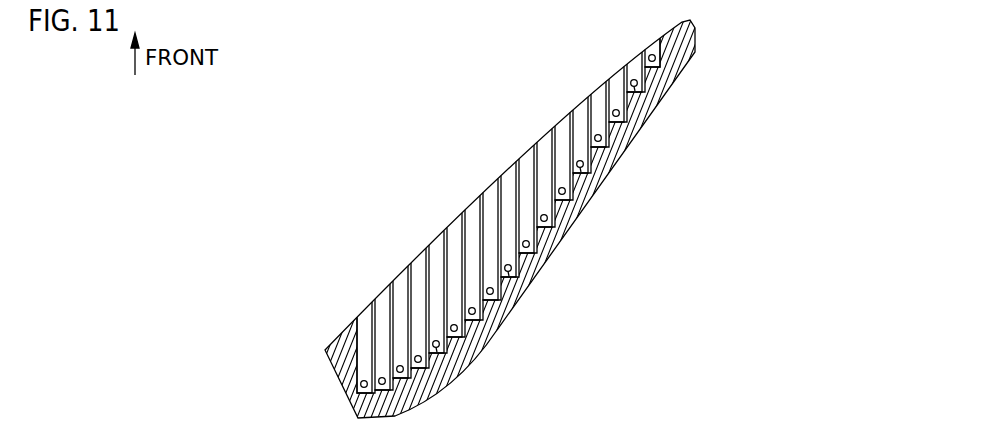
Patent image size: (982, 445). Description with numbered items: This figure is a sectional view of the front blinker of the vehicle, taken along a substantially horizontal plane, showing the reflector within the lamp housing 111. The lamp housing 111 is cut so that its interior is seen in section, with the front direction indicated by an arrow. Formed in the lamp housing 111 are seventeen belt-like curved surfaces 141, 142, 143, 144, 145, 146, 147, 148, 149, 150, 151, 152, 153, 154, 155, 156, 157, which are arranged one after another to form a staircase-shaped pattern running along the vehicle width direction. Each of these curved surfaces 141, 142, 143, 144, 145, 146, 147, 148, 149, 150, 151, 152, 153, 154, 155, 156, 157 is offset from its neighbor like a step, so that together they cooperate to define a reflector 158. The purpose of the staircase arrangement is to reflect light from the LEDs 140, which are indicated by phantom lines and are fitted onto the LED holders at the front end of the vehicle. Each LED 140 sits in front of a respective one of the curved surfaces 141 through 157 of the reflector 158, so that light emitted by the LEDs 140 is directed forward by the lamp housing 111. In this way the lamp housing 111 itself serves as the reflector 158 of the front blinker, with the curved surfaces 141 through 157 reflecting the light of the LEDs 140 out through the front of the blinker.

The lamp housing 111 is at (702, 45).
The LEDs 140 is at (525, 293).
The belt-like curved surface 141 is at (651, 46).
The belt-like curved surface 142 is at (633, 61).
The belt-like curved surface 143 is at (614, 75).
The belt-like curved surface 144 is at (596, 90).
The belt-like curved surface 145 is at (578, 106).
The belt-like curved surface 146 is at (560, 122).
The belt-like curved surface 147 is at (542, 138).
The belt-like curved surface 148 is at (524, 154).
The belt-like curved surface 149 is at (506, 171).
The belt-like curved surface 150 is at (488, 188).
The belt-like curved surface 151 is at (470, 205).
The belt-like curved surface 152 is at (452, 223).
The belt-like curved surface 153 is at (434, 240).
The belt-like curved surface 154 is at (416, 258).
The belt-like curved surface 155 is at (398, 276).
The belt-like curved surface 156 is at (380, 294).
The belt-like curved surface 157 is at (362, 312).
The reflector 158 is at (387, 127).